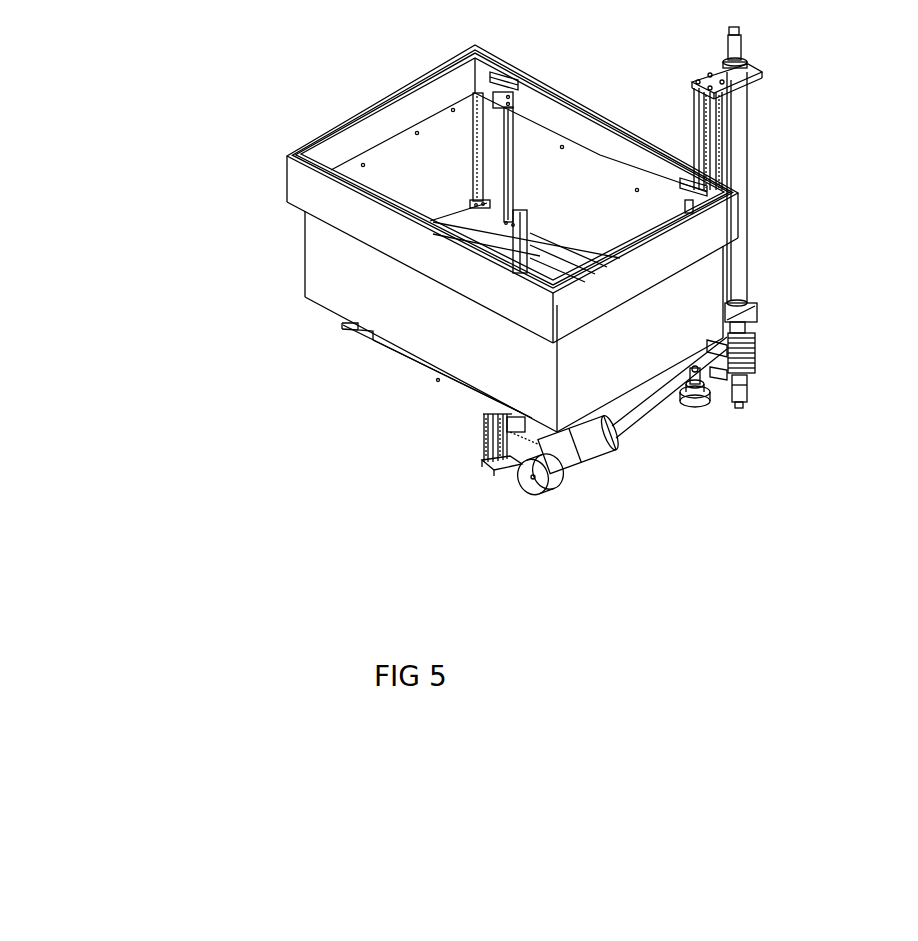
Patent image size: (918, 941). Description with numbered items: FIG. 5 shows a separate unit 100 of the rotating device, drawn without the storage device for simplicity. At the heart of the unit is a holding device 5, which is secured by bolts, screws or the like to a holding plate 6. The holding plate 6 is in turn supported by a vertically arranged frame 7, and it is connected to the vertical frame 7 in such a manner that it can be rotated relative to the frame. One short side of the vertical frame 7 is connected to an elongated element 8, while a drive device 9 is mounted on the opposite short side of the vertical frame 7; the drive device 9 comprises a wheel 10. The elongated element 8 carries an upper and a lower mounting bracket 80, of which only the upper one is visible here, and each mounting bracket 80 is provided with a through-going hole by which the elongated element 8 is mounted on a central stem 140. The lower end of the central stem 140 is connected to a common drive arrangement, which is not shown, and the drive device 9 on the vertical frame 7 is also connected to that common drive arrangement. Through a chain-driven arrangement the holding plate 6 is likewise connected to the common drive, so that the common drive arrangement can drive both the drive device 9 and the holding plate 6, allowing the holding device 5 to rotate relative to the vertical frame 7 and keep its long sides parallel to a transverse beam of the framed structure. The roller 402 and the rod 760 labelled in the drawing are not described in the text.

The separate unit 100 is at (200, 196).
The holding device 5 is at (327, 272).
The holding plate 6 is at (417, 367).
The vertically arranged frame 7 is at (482, 432).
The elongated element 8 is at (693, 145).
The drive device 9 is at (595, 460).
The wheel 10 is at (542, 490).
The mounting bracket 80 is at (722, 72).
The central stem 140 is at (740, 162).
The roller 402 is at (712, 412).
The piston rod 760 is at (748, 65).